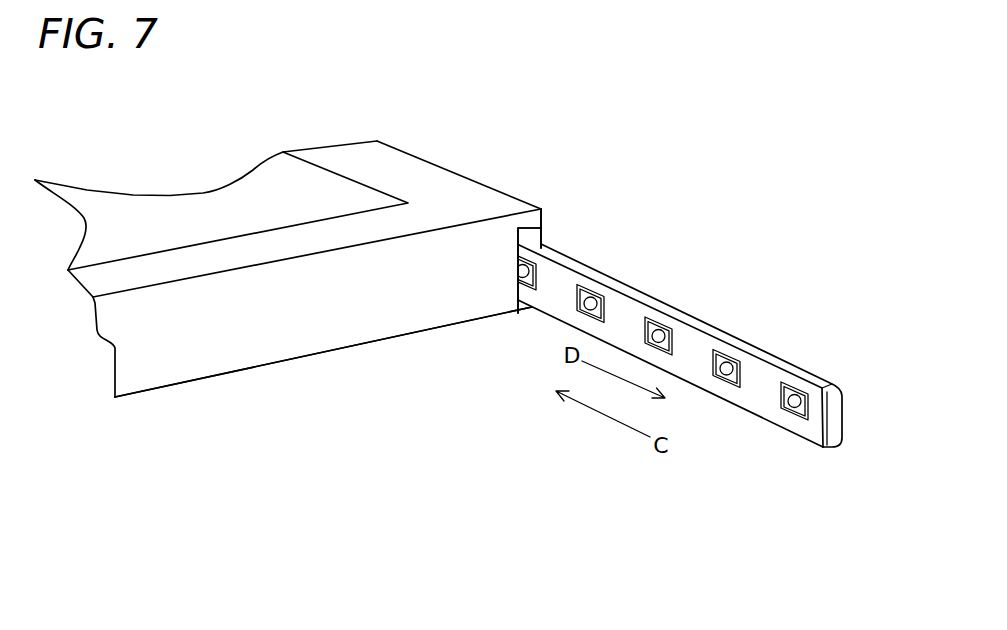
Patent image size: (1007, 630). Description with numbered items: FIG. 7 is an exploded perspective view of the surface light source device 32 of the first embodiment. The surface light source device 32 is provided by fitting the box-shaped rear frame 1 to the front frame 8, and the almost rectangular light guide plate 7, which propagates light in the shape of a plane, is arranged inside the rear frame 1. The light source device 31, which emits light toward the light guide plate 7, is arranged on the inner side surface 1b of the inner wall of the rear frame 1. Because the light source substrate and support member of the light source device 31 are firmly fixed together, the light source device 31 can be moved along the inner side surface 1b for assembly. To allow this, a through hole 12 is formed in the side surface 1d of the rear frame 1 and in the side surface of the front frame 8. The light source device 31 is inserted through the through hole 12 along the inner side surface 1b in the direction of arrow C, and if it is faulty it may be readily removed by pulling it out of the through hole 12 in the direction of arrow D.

The light guide plate 7 is at (175, 210).
The front frame 8 is at (418, 182).
The rear frame 1 is at (423, 323).
The inner side surface 1b is at (533, 230).
The side surface 1d is at (292, 350).
The through hole 12 is at (566, 227).
The light source device 31 is at (618, 307).
The surface light source device 32 is at (368, 482).